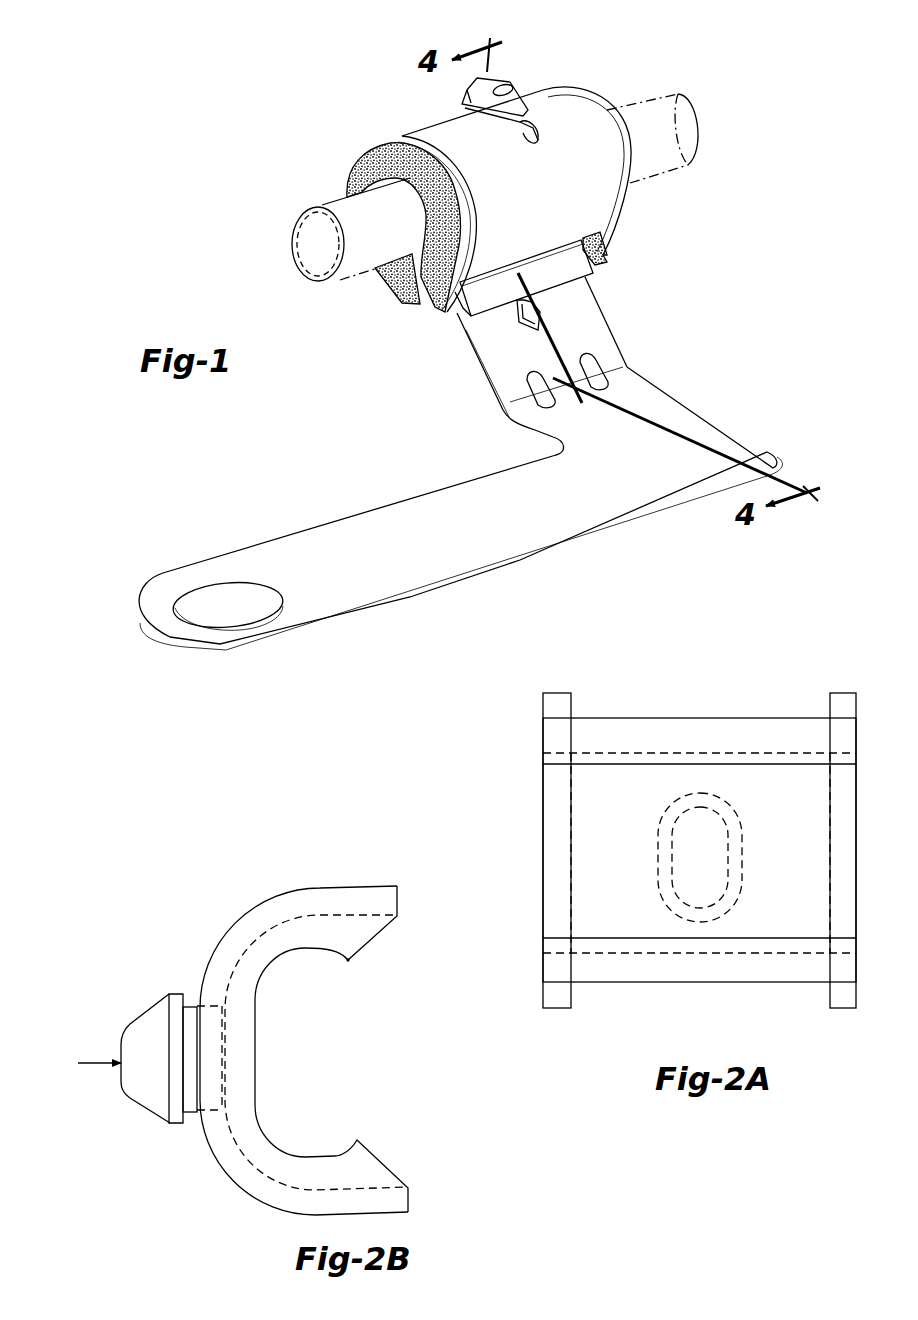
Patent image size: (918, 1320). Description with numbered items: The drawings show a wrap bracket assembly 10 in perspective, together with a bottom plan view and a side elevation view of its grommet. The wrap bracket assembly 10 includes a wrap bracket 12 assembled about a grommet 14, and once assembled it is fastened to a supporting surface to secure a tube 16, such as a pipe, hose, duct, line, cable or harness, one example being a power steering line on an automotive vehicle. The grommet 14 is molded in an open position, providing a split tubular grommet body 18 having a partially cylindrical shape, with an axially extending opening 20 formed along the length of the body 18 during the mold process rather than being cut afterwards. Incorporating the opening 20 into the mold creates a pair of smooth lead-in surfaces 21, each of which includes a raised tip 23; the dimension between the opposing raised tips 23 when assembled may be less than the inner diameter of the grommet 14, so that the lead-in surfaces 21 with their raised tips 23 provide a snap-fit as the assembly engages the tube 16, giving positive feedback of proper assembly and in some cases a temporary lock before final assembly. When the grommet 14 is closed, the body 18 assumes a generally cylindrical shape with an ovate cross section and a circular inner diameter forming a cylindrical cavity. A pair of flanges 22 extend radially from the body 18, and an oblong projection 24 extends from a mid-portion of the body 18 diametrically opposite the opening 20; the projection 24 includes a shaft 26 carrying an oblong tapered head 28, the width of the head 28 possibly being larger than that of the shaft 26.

In FIG. 1, the wrap bracket assembly 10 is at (655, 62).
In FIG. 1, the wrap bracket 12 is at (563, 117).
In FIG. 1, the grommet 14 is at (355, 170).
In FIG. 2A, the grommet 14 is at (730, 680).
In FIG. 2B, the grommet 14 is at (296, 882).
In FIG. 1, the tube 16 is at (683, 133).
In FIG. 2A, the split tubular grommet body 18 is at (664, 718).
In FIG. 2B, the axially extending opening 20 is at (348, 1046).
In FIG. 2B, the lead-in surfaces 21 is at (372, 937).
In FIG. 2A, the flanges 22 is at (558, 693).
In FIG. 2B, the raised tip 23 is at (349, 958).
In FIG. 2B, the oblong projection 24 is at (136, 1010).
In FIG. 2B, the shaft 26 is at (190, 1006).
In FIG. 2B, the oblong tapered head 28 is at (85, 1065).